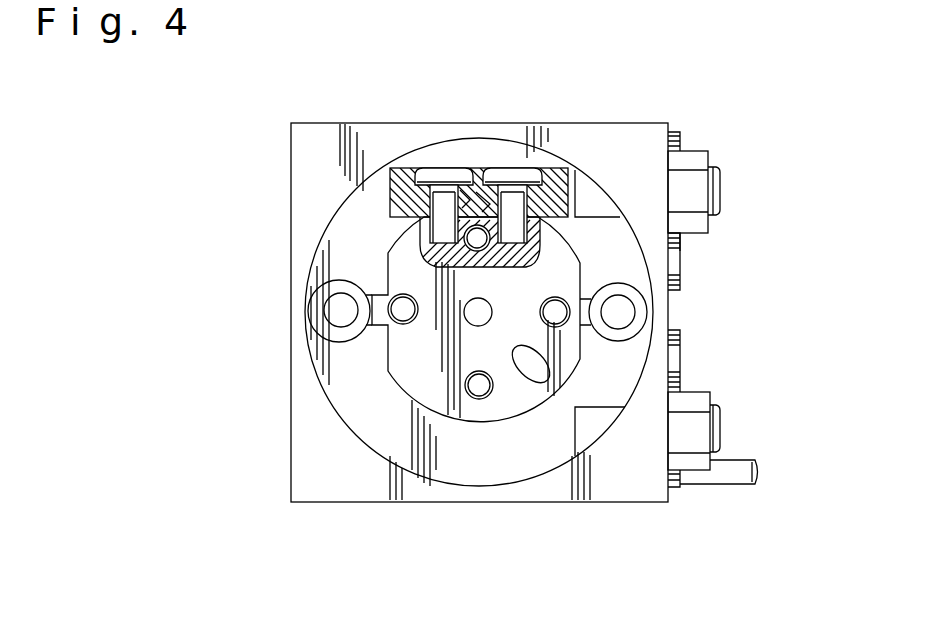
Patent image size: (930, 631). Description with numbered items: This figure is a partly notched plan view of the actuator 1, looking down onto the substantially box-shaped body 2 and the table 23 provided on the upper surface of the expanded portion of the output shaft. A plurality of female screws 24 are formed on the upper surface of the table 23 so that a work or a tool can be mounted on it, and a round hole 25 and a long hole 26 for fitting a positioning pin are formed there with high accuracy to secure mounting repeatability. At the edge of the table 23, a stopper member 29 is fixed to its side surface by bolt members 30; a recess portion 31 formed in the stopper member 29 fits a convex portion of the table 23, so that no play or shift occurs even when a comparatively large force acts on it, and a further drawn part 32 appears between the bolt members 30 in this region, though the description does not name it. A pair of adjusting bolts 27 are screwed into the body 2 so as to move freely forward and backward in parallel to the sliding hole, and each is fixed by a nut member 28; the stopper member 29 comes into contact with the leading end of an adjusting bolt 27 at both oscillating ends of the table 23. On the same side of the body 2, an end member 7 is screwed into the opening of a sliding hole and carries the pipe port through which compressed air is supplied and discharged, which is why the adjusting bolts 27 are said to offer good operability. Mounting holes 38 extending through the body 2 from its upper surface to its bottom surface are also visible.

The actuator 1 is at (298, 96).
The body 2 is at (594, 143).
The end member 7 is at (673, 255).
The table 23 is at (427, 373).
The female screws 24 is at (433, 263).
The round hole 25 is at (480, 316).
The long hole 26 is at (530, 368).
The adjusting bolts 27 is at (590, 197).
The nut members 28 is at (685, 183).
The stopper member 29 is at (393, 168).
The bolt members 30 is at (440, 177).
The recess portion 31 is at (462, 200).
The spring 32 is at (480, 205).
The mounting holes 38 is at (337, 308).